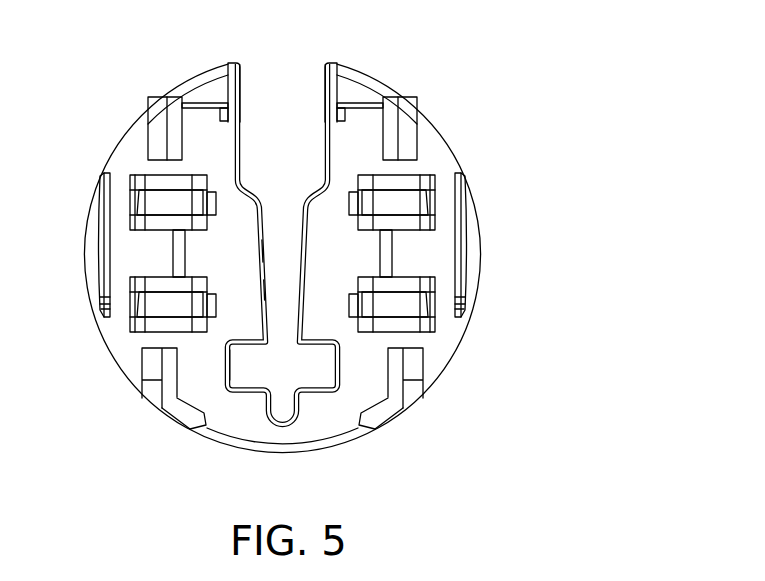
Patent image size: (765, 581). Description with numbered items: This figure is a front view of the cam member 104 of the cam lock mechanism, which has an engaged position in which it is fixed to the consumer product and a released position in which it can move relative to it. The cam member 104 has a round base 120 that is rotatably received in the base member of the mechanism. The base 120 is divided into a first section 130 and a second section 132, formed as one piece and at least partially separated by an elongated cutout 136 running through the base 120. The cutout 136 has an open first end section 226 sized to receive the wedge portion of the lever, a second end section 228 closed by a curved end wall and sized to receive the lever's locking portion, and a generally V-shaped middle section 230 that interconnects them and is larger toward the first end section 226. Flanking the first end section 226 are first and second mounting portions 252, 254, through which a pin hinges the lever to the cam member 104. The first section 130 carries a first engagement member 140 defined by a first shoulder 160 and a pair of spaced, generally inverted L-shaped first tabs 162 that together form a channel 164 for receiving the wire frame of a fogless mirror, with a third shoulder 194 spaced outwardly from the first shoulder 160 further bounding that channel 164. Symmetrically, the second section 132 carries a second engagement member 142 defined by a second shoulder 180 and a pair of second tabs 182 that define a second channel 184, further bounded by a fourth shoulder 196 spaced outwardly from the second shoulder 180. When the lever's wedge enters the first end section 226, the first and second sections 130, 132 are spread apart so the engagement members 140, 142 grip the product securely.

The cam member 104 is at (586, 210).
The base 120 is at (250, 420).
The first section 130 is at (118, 358).
The second section 132 is at (368, 388).
The elongated cutout 136 is at (262, 250).
The first engagement member 140 is at (221, 146).
The second engagement member 142 is at (344, 146).
The first shoulder 160 is at (188, 250).
The first tab 162 is at (172, 180).
The channel 164 is at (123, 188).
The second shoulder 180 is at (382, 252).
The second tab 182 is at (410, 180).
The second channel 184 is at (445, 180).
The third shoulder 194 is at (92, 260).
The fourth shoulder 196 is at (474, 265).
The first end section 226 is at (250, 145).
The second end section 228 is at (230, 372).
The middle section 230 is at (262, 287).
The first mounting portion 252 is at (226, 90).
The second mounting portion 254 is at (341, 93).